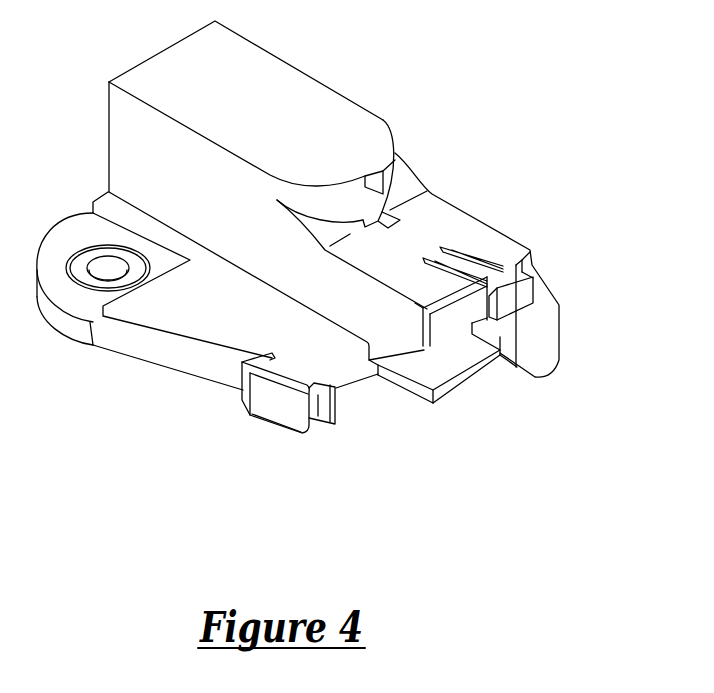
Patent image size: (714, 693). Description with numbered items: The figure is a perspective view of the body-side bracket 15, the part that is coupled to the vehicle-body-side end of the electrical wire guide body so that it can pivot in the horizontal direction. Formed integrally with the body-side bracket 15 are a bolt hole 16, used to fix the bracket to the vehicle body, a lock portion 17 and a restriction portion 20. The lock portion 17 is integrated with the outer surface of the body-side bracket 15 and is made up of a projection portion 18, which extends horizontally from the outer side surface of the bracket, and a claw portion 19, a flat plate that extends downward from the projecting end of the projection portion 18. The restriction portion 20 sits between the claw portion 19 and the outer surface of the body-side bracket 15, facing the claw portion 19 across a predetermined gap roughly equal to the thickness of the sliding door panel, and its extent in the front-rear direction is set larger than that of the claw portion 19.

The body-side bracket 15 is at (433, 215).
The bolt hole 16 is at (110, 268).
The lock portion 17 is at (249, 420).
The projection portion 18 is at (282, 381).
The claw portion 19 is at (283, 420).
The restriction portion 20 is at (319, 402).